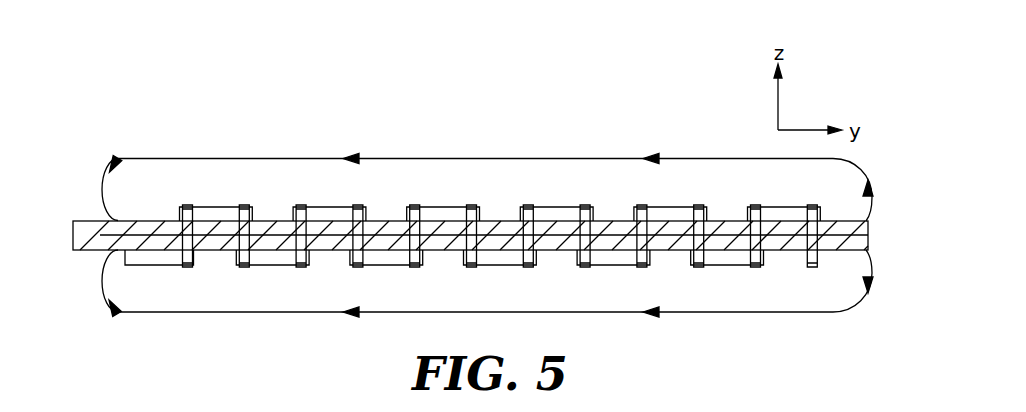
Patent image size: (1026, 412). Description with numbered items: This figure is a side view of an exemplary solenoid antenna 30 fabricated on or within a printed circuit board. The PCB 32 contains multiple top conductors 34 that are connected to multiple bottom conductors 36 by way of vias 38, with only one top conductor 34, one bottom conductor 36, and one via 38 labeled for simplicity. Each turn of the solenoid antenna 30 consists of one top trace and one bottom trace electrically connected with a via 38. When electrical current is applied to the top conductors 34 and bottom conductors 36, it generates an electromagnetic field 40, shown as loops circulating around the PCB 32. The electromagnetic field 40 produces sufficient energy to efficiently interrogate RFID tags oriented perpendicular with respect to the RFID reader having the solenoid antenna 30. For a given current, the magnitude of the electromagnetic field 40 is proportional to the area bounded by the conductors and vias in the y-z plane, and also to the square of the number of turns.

The solenoid antenna 30 is at (70, 202).
The PCB 32 is at (868, 237).
The top conductors 34 is at (218, 212).
The bottom conductors 36 is at (272, 257).
The vias 38 is at (297, 205).
The electromagnetic field 40 is at (541, 158).